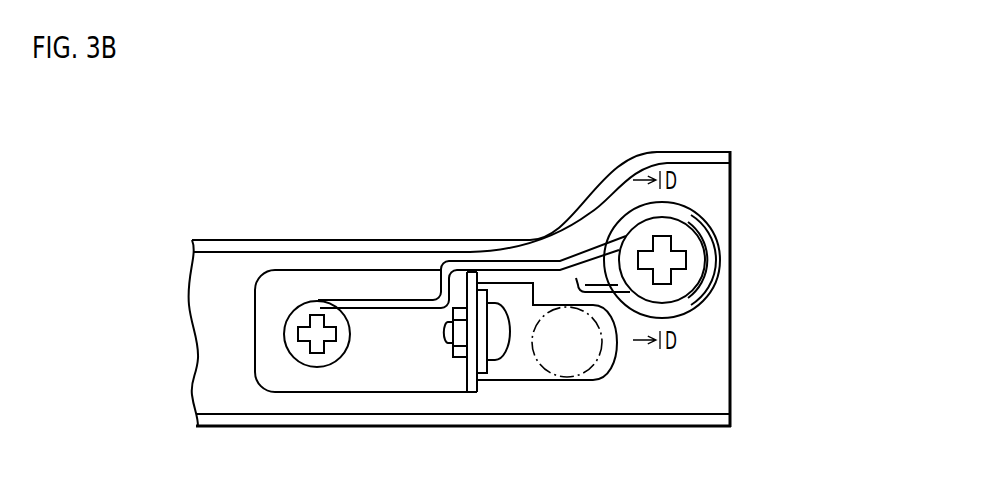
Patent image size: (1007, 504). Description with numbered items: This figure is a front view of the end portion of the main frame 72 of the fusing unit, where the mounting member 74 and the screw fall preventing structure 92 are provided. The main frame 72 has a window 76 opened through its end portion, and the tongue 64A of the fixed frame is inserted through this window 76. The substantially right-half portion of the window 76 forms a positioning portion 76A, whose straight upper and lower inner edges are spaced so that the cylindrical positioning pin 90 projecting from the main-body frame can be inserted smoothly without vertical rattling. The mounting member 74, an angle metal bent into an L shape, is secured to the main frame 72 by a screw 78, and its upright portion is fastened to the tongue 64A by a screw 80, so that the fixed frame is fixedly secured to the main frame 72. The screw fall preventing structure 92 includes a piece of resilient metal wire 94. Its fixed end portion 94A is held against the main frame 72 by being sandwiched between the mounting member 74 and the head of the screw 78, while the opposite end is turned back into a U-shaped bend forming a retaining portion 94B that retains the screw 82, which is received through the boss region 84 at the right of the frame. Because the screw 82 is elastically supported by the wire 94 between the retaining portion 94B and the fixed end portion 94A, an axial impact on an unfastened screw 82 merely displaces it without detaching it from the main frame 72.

The main frame 72 is at (217, 239).
The screw fall preventing structure 92 is at (432, 158).
The mounting member 74 is at (358, 374).
The screw 78 is at (313, 299).
The wire 94 is at (521, 258).
The fixed end portion 94A is at (323, 291).
The retaining portion 94B is at (704, 296).
The screw 82 is at (674, 237).
The boss 84 is at (703, 230).
The screw 80 is at (527, 354).
The tongue 64A is at (499, 370).
The window 76 is at (522, 363).
The positioning portion 76A is at (566, 381).
The positioning pin 90 is at (560, 420).